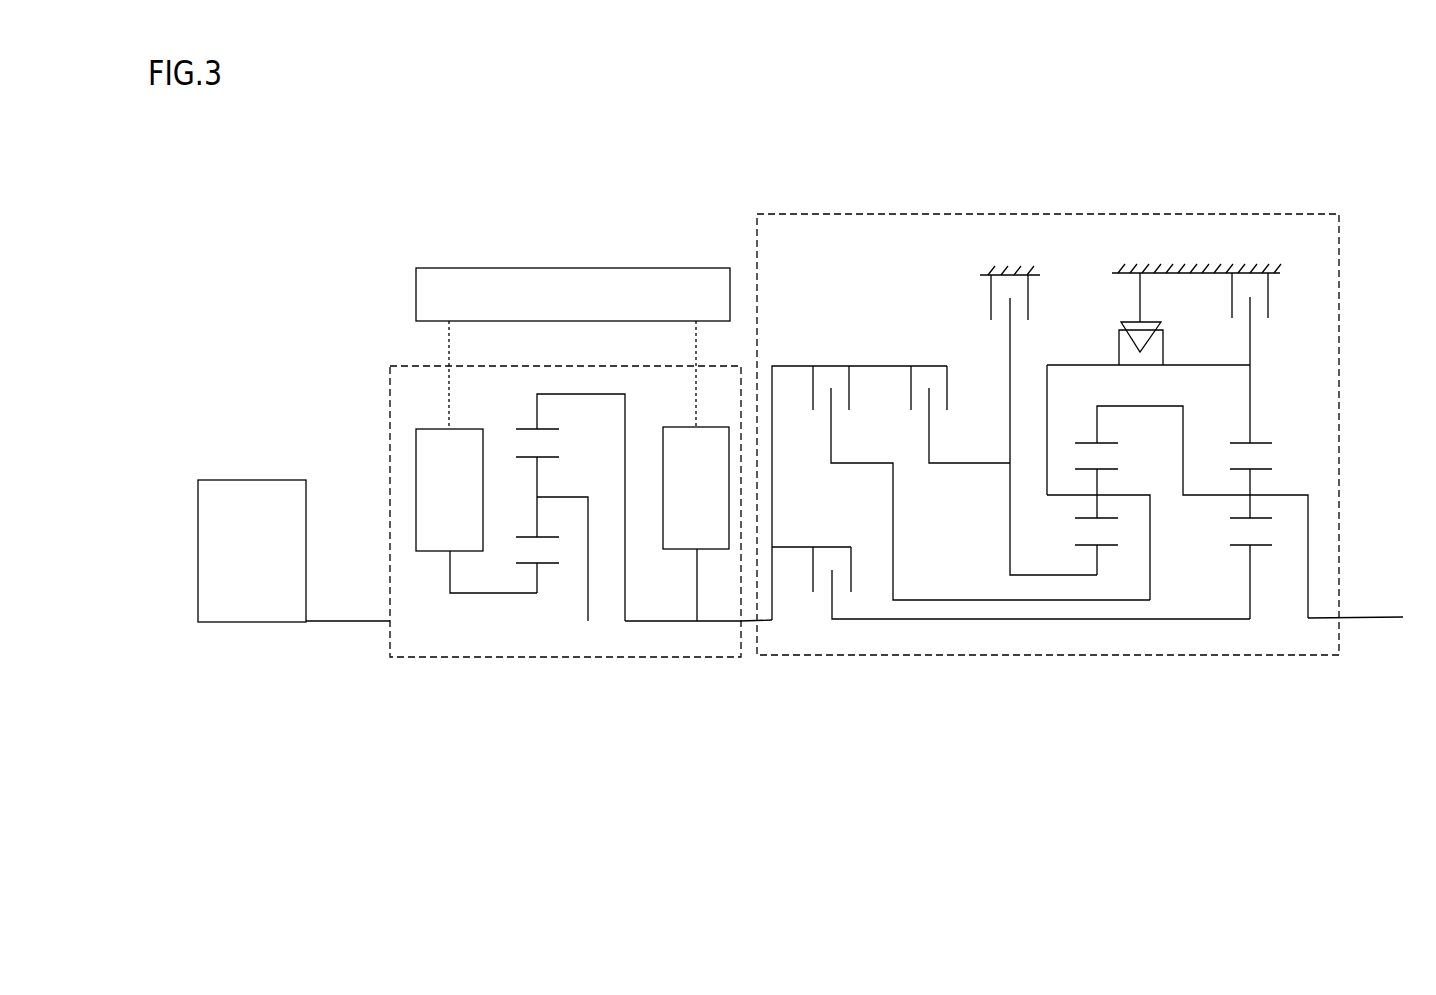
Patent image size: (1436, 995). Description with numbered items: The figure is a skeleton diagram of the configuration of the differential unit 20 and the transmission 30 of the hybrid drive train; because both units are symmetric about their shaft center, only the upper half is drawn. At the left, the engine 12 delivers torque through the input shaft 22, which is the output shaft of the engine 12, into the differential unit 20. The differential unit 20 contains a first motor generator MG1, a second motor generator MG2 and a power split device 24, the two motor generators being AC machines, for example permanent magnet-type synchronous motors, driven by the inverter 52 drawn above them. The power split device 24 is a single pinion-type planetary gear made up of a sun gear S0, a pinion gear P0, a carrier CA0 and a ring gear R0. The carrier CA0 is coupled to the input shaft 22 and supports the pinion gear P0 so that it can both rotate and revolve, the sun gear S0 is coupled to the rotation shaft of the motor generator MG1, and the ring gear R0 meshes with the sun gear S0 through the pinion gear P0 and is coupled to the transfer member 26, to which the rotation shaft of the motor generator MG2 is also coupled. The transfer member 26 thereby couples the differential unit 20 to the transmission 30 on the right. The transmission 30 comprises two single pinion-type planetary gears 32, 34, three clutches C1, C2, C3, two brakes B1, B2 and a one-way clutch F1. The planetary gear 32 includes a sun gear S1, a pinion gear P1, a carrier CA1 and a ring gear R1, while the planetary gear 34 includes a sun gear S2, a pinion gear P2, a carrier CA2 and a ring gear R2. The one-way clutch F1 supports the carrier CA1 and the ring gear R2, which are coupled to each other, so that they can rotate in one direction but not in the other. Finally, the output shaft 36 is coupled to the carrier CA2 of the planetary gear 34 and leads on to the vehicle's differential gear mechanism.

The engine 12 is at (265, 479).
The differential unit 20 is at (626, 366).
The input shaft 22 is at (354, 623).
The power split device 24 is at (563, 550).
The transfer member 26 is at (723, 624).
The transmission 30 is at (1281, 214).
The planetary gear 32 is at (1136, 556).
The planetary gear 34 is at (1252, 561).
The output shaft 36 is at (1368, 614).
The inverter 52 is at (684, 268).
The motor generator MG1 is at (432, 427).
The motor generator MG2 is at (678, 425).
The ring gear R0 is at (556, 428).
The pinion gear P0 is at (522, 535).
The carrier CA0 is at (552, 497).
The sun gear S0 is at (544, 589).
The clutch C1 is at (1011, 570).
The clutch C2 is at (981, 472).
The clutch C3 is at (960, 403).
The brake B1 is at (1038, 407).
The brake B2 is at (1250, 340).
The one-way clutch F1 is at (1141, 301).
The ring gear R1 is at (1112, 443).
The pinion gear P1 is at (1078, 518).
The carrier CA1 is at (1112, 495).
The sun gear S1 is at (1103, 570).
The ring gear R2 is at (1267, 443).
The pinion gear P2 is at (1234, 518).
The carrier CA2 is at (1267, 495).
The sun gear S2 is at (1261, 635).